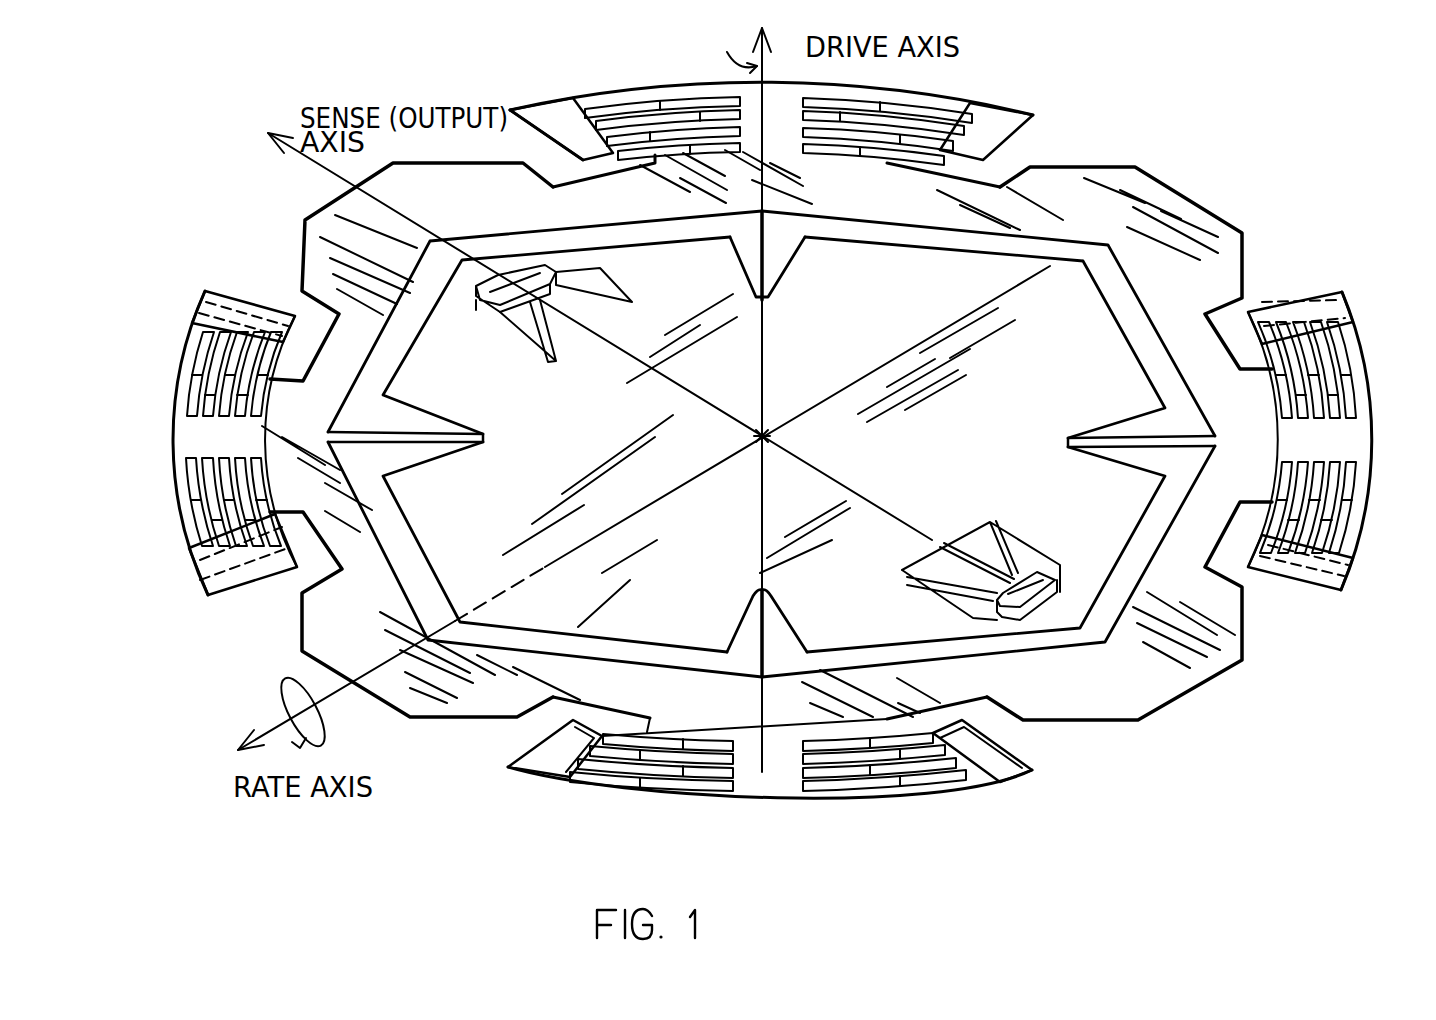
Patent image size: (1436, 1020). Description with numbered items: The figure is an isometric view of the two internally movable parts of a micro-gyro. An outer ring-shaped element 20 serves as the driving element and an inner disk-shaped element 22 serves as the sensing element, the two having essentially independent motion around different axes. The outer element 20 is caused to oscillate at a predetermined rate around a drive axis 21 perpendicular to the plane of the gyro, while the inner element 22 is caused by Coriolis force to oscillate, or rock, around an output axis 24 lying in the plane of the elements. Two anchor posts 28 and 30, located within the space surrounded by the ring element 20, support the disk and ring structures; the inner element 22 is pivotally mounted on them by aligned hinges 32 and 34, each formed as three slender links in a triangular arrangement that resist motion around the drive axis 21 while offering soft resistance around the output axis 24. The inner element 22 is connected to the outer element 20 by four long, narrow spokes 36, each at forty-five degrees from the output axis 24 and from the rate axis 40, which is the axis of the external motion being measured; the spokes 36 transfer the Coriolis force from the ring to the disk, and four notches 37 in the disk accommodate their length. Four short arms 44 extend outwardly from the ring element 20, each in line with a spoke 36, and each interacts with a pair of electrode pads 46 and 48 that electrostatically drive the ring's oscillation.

The outer ring-shaped element 20 is at (1175, 235).
The drive axis 21 is at (728, 51).
The inner disk-shaped element 22 is at (953, 277).
The output axis 24 is at (322, 170).
The anchor post 28 is at (517, 280).
The anchor post 30 is at (1048, 593).
The hinges (links) 32 is at (573, 324).
The hinges (links) 34 is at (961, 551).
The spokes (flexures) 36 is at (770, 255).
The notches 37 is at (807, 247).
The rate axis 40 is at (262, 723).
The short arms (protrusions) 44 is at (780, 115).
The electrode pad 46 is at (1299, 297).
The electrode pad 48 is at (998, 108).